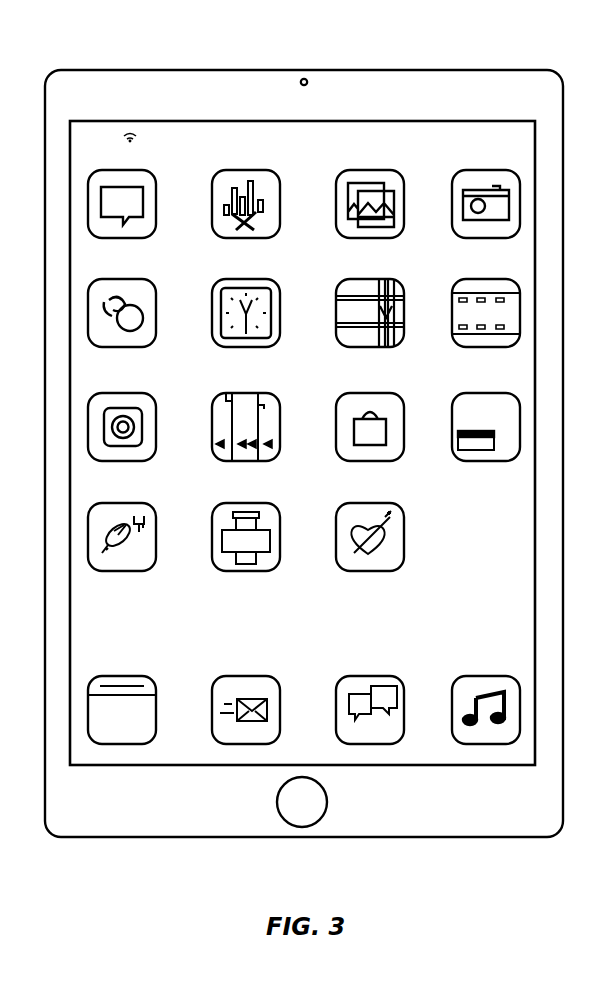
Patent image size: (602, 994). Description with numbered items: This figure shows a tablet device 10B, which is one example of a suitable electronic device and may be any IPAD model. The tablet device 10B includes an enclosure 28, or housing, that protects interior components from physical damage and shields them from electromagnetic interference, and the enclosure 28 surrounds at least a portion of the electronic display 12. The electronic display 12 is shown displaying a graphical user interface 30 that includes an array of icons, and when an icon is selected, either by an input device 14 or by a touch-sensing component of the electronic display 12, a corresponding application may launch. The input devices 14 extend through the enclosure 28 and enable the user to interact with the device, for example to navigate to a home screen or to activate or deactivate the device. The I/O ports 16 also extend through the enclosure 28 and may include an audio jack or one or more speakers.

The tablet device 10B is at (42, 64).
The input devices 14 is at (499, 69).
The electronic display 12 is at (536, 510).
The I/O ports 16 is at (303, 839).
The enclosure 28 is at (247, 573).
The graphical user interface 30 is at (512, 567).